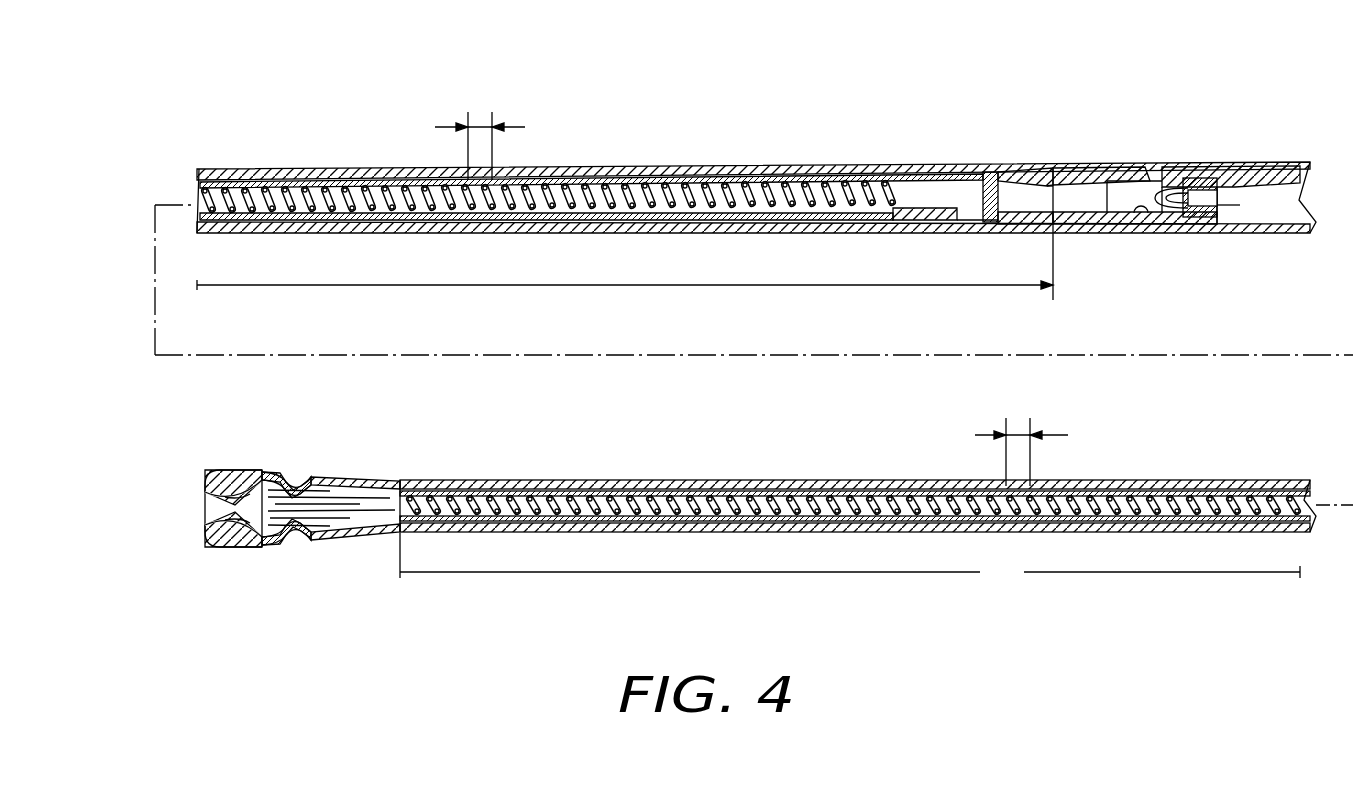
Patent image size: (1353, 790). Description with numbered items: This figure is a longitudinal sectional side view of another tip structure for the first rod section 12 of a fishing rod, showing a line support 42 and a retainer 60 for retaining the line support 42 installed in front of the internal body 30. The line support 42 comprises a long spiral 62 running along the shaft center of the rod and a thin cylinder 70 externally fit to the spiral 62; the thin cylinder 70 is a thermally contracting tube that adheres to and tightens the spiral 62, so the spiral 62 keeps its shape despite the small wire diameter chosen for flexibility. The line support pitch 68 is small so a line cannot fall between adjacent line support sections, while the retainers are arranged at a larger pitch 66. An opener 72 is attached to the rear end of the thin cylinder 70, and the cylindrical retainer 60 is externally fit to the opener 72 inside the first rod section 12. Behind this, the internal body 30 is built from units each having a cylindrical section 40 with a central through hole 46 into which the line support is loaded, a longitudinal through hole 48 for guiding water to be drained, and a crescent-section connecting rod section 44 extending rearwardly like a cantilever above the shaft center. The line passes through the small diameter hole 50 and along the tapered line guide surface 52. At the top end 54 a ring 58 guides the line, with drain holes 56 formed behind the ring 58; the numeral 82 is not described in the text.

The first rod section 12 is at (338, 168).
The internal body 30 is at (1260, 118).
The cylindrical section 40 is at (1140, 180).
The line support 42 is at (725, 113).
The connecting rod section 44 is at (1250, 178).
The through hole 46 is at (1155, 225).
The longitudinal through hole 48 is at (1130, 235).
The small diameter hole 50 is at (1215, 257).
The valve member 82 is at (1175, 215).
The line guide surface 52 is at (1215, 212).
The top end 54 is at (352, 545).
The drain holes 56 is at (288, 477).
The ring 58 is at (208, 540).
The retainer 60 is at (1025, 175).
The spiral 62 is at (605, 190).
The pitch 66 is at (850, 560).
The line support pitch 68 is at (481, 124).
The thin cylinder 70 is at (705, 190).
The opener 72 is at (975, 178).